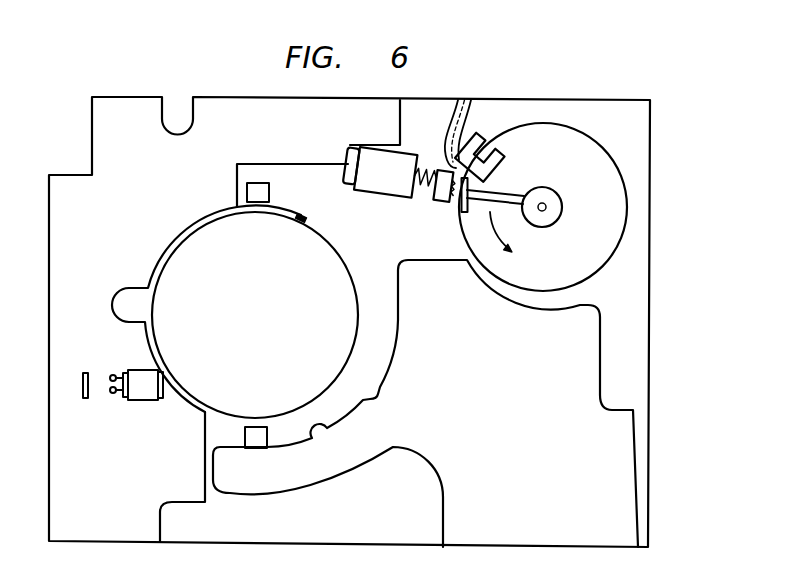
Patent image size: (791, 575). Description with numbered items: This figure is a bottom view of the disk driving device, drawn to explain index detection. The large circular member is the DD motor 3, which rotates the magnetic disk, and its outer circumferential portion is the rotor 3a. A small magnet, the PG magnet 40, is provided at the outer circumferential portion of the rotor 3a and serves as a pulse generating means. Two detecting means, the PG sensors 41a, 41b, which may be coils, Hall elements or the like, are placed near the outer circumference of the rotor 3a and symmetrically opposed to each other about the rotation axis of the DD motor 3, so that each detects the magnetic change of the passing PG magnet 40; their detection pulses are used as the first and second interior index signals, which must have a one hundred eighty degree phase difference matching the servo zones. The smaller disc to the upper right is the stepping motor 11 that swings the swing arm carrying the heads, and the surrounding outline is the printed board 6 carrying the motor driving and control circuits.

The DD motor 3 is at (338, 280).
The rotor 3a is at (333, 243).
The printed board 6 is at (650, 305).
The stepping motor 11 is at (600, 147).
The PG magnet 40 is at (302, 217).
The PG sensor 41a is at (247, 192).
The PG sensor 41b is at (245, 432).